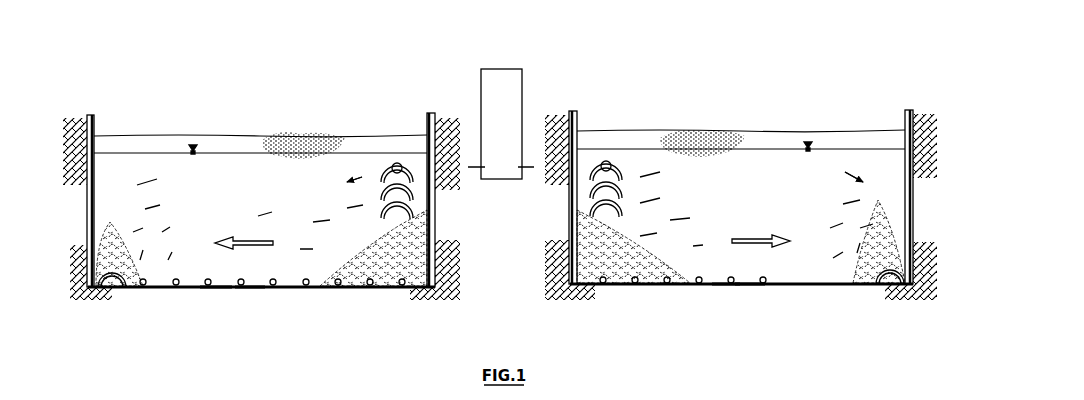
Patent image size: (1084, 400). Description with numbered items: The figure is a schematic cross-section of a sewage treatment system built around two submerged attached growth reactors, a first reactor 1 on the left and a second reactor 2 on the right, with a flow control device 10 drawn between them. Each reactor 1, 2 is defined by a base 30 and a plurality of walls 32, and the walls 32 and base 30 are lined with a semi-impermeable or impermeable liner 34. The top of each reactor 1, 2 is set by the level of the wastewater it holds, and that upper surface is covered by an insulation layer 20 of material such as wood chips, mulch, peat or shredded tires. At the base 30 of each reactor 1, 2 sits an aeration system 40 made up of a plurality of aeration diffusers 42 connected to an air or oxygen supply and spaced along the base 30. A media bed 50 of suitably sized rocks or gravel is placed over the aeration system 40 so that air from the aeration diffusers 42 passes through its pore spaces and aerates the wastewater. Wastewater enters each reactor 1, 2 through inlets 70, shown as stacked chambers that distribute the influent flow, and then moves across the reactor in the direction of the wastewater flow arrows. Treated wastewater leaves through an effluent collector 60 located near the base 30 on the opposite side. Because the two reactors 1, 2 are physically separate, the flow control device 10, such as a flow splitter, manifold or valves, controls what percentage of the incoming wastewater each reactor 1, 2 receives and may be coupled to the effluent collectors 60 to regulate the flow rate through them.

The first reactor 1 is at (262, 95).
The second reactor 2 is at (740, 92).
The flow control device 10 is at (501, 124).
The insulation layer 20 is at (298, 142).
The base 30 is at (252, 290).
The walls 32 is at (439, 229).
The liner 34 is at (228, 289).
The aeration system 40 is at (285, 300).
The aeration diffusers 42 is at (205, 289).
The media bed 50 is at (400, 255).
The effluent collector 60 is at (112, 284).
The inlets 70 is at (390, 156).